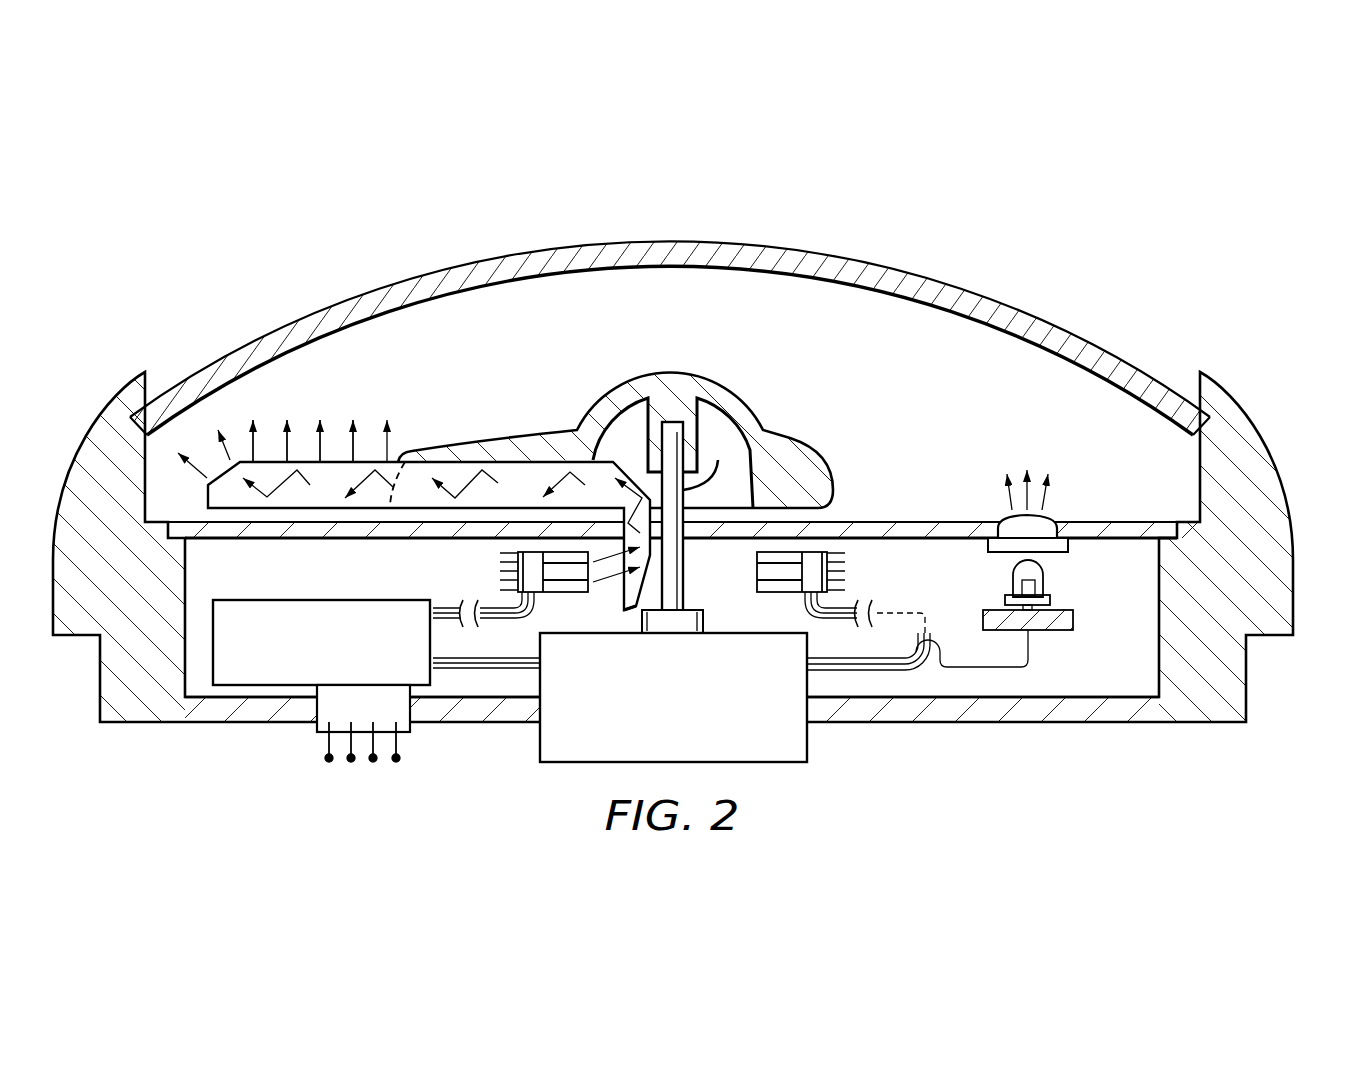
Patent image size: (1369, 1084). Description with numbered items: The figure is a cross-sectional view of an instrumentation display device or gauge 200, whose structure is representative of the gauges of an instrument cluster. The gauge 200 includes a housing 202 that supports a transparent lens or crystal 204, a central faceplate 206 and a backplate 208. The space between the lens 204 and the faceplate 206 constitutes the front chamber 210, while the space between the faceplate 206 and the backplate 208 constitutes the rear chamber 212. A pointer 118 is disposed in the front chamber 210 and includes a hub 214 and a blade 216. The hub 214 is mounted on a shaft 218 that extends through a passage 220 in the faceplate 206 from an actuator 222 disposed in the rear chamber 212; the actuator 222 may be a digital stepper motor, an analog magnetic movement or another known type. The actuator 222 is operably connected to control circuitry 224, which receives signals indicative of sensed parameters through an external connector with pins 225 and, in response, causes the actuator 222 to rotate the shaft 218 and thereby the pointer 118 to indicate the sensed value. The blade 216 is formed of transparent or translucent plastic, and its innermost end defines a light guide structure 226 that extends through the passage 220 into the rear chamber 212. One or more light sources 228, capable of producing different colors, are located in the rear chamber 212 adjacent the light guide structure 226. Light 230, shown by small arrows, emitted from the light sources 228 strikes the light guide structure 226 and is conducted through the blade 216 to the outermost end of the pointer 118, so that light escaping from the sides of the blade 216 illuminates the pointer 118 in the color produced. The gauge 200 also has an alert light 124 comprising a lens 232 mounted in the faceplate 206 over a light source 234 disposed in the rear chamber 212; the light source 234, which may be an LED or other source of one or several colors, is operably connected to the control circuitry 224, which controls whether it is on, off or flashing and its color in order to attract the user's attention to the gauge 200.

The gauge 200 is at (545, 206).
The housing 202 is at (1282, 479).
The lens 204 is at (440, 268).
The faceplate 206 is at (1152, 517).
The backplate 208 is at (1084, 727).
The front chamber 210 is at (847, 356).
The rear chamber 212 is at (1089, 675).
The hub 214 is at (713, 380).
The blade 216 is at (414, 527).
The shaft 218 is at (718, 460).
The passage 220 is at (708, 543).
The actuator 222 is at (650, 716).
The control circuitry 224 is at (299, 659).
The connector pins 225 is at (322, 735).
The light guide structure 226 is at (620, 591).
The light sources 228 is at (485, 577).
The light 230 is at (403, 460).
The lens 232 is at (1026, 490).
The light source 234 is at (1043, 588).
The pointer 118 is at (615, 398).
The alert light 124 is at (1057, 500).